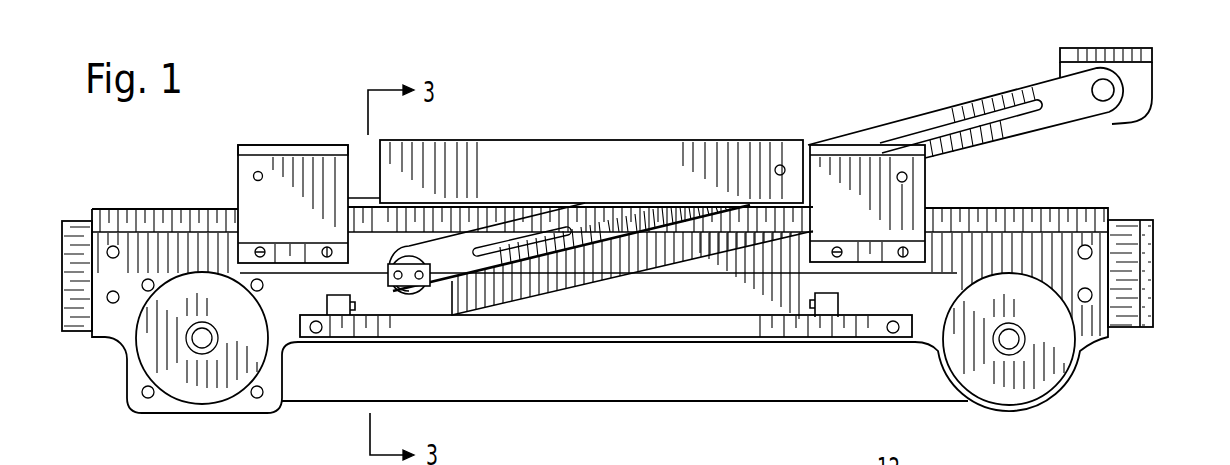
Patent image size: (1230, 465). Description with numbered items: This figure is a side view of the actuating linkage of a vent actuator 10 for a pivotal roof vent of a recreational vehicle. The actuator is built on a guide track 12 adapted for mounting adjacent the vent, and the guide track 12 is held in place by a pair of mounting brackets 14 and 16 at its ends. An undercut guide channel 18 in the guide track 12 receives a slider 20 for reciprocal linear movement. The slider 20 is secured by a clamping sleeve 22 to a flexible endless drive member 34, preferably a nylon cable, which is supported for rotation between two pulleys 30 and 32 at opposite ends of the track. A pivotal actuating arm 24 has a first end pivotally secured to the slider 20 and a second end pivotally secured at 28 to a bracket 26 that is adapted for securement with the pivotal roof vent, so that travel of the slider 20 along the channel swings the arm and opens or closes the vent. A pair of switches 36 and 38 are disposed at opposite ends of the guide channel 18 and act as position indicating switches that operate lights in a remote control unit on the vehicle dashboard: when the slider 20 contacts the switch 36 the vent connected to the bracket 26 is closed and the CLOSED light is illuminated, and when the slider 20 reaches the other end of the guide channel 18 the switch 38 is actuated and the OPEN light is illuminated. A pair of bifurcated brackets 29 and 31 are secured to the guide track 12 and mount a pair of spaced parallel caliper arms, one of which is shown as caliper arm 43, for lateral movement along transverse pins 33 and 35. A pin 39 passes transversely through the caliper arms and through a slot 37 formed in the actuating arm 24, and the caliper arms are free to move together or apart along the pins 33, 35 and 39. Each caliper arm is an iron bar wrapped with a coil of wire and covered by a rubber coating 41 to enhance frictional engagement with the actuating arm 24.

The vent actuator 10 is at (276, 113).
The guide track 12 is at (527, 222).
The mounting bracket 14 is at (77, 332).
The mounting bracket 16 is at (1128, 225).
The undercut guide channel 18 is at (930, 255).
The slider 20 is at (428, 305).
The clamping sleeve 22 is at (440, 262).
The pivotal actuating arm 24 is at (858, 137).
The bracket 26 is at (1147, 68).
The pivot 28 is at (1092, 90).
The bifurcated bracket 29 is at (238, 195).
The pulley 30 is at (173, 377).
The bifurcated bracket 31 is at (928, 197).
The pulley 32 is at (1058, 353).
The transverse pin 33 is at (253, 177).
The flexible endless drive member 34 is at (513, 401).
The transverse pin 35 is at (908, 175).
The switch 36 is at (335, 307).
The slot 37 is at (943, 130).
The switch 38 is at (830, 303).
The pin 39 is at (780, 165).
The rubber coating 41 is at (655, 140).
The caliper arm 43 is at (307, 147).